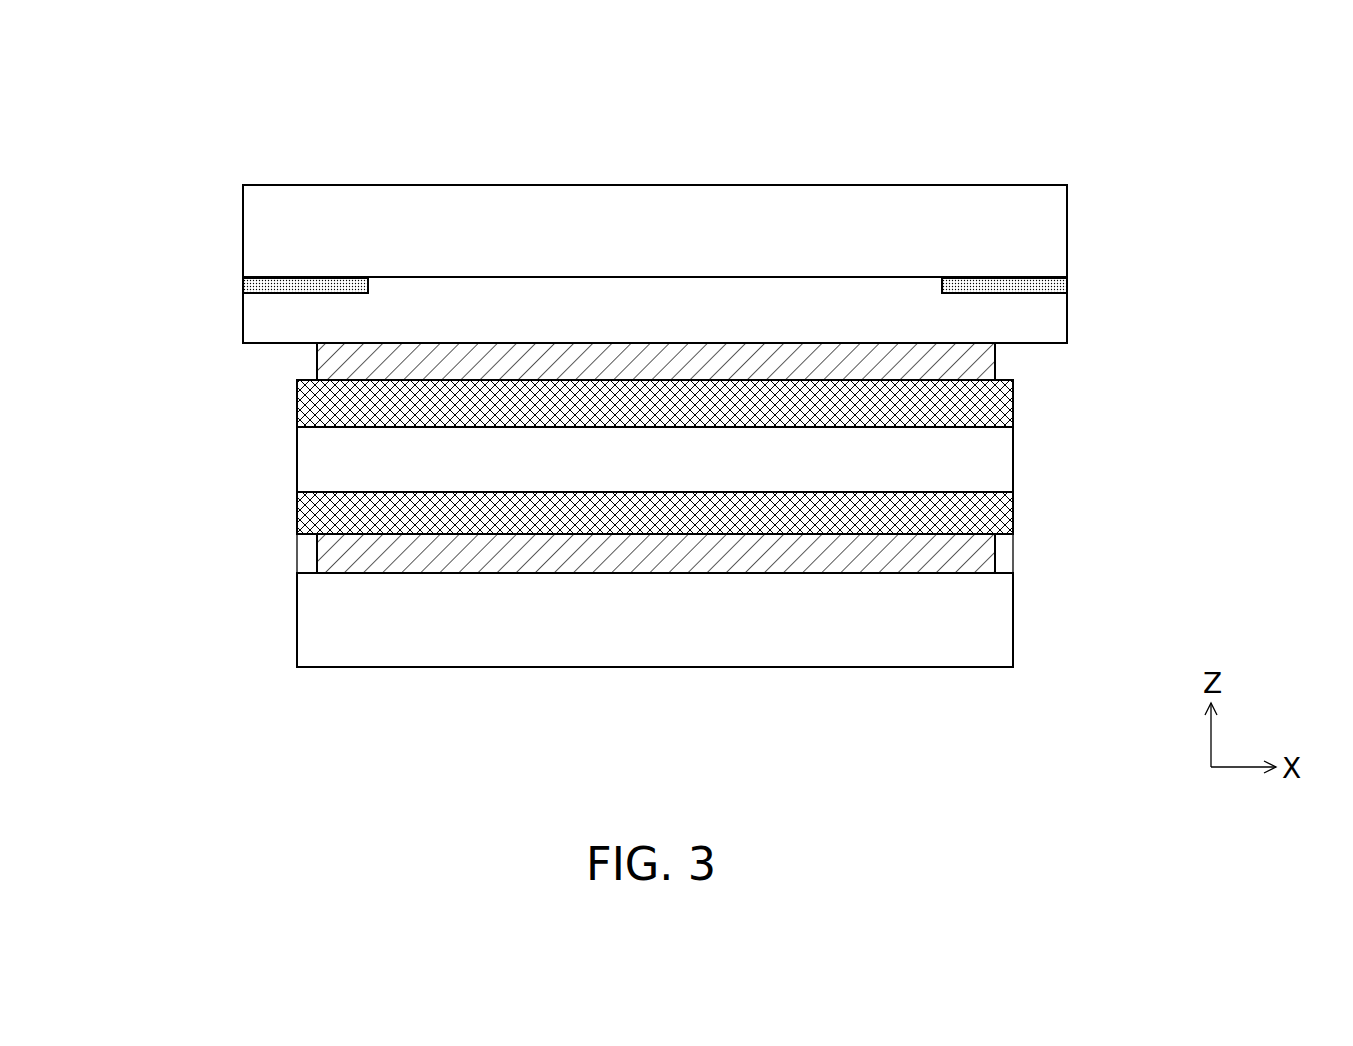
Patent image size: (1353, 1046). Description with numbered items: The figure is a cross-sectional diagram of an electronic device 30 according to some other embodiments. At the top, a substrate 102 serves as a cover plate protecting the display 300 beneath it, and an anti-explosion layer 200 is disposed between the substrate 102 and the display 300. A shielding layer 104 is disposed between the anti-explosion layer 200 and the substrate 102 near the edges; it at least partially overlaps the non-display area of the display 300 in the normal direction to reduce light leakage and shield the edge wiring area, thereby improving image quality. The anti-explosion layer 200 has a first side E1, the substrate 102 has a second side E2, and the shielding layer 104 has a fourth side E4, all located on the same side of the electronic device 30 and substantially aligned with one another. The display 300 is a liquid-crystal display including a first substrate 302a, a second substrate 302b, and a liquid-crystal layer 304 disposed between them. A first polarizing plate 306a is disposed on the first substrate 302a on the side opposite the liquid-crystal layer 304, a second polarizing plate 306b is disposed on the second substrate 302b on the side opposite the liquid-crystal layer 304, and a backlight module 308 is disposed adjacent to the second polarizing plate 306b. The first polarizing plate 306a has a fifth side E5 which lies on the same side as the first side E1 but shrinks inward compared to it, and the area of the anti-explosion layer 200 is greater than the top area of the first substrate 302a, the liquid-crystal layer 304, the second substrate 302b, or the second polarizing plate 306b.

The electronic device 30 is at (133, 73).
The substrate 102 is at (267, 231).
The shielding layer 104 is at (266, 287).
The anti-explosion layer 200 is at (267, 323).
The display 300 is at (290, 343).
The first substrate 302a is at (1015, 410).
The second substrate 302b is at (1015, 508).
The liquid-crystal layer 304 is at (972, 459).
The first polarizing plate 306a is at (973, 371).
The second polarizing plate 306b is at (973, 549).
The backlight module 308 is at (972, 632).
The first side E1 is at (1071, 323).
The second side E2 is at (1071, 232).
The fourth side E4 is at (1071, 287).
The fifth side E5 is at (997, 355).